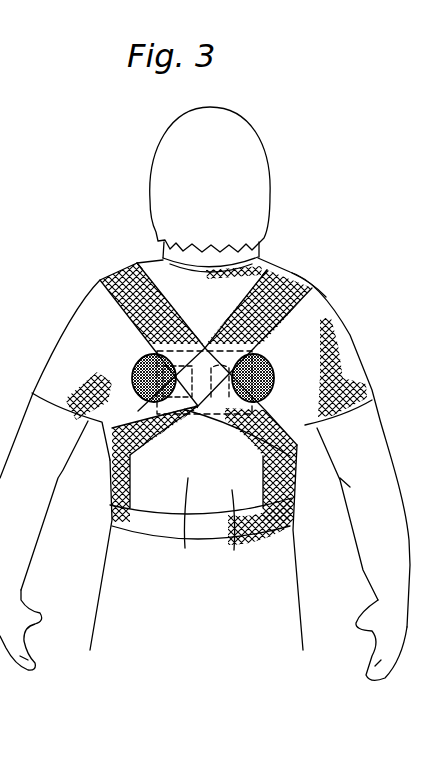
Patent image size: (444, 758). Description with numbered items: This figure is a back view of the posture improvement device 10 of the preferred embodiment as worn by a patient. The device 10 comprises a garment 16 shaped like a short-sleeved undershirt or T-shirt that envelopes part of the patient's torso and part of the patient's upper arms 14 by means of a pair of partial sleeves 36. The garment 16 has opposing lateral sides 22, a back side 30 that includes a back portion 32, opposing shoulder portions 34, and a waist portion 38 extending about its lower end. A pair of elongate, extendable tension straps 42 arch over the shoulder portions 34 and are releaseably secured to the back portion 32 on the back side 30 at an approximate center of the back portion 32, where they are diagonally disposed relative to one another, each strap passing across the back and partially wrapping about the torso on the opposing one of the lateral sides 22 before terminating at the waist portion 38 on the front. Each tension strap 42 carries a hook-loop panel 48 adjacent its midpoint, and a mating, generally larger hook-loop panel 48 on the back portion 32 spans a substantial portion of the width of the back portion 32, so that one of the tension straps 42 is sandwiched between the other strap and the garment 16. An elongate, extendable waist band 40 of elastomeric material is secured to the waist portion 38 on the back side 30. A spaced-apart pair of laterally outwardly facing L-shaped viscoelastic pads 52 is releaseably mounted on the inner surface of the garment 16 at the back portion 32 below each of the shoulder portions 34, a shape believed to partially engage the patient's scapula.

The posture improvement device 10 is at (82, 238).
The patient's upper arms 14 is at (66, 326).
The garment 16 is at (322, 291).
The lateral sides 22 is at (113, 480).
The back side 30 is at (185, 548).
The back portion 32 is at (234, 550).
The shoulder portions 34 is at (160, 262).
The partial sleeves 36 is at (352, 384).
The waist portion 38 is at (149, 532).
The waist band 40 is at (290, 514).
The tension straps 42 is at (108, 280).
The hook-loop panel 48 is at (275, 374).
The viscoelastic pads 52 is at (212, 416).